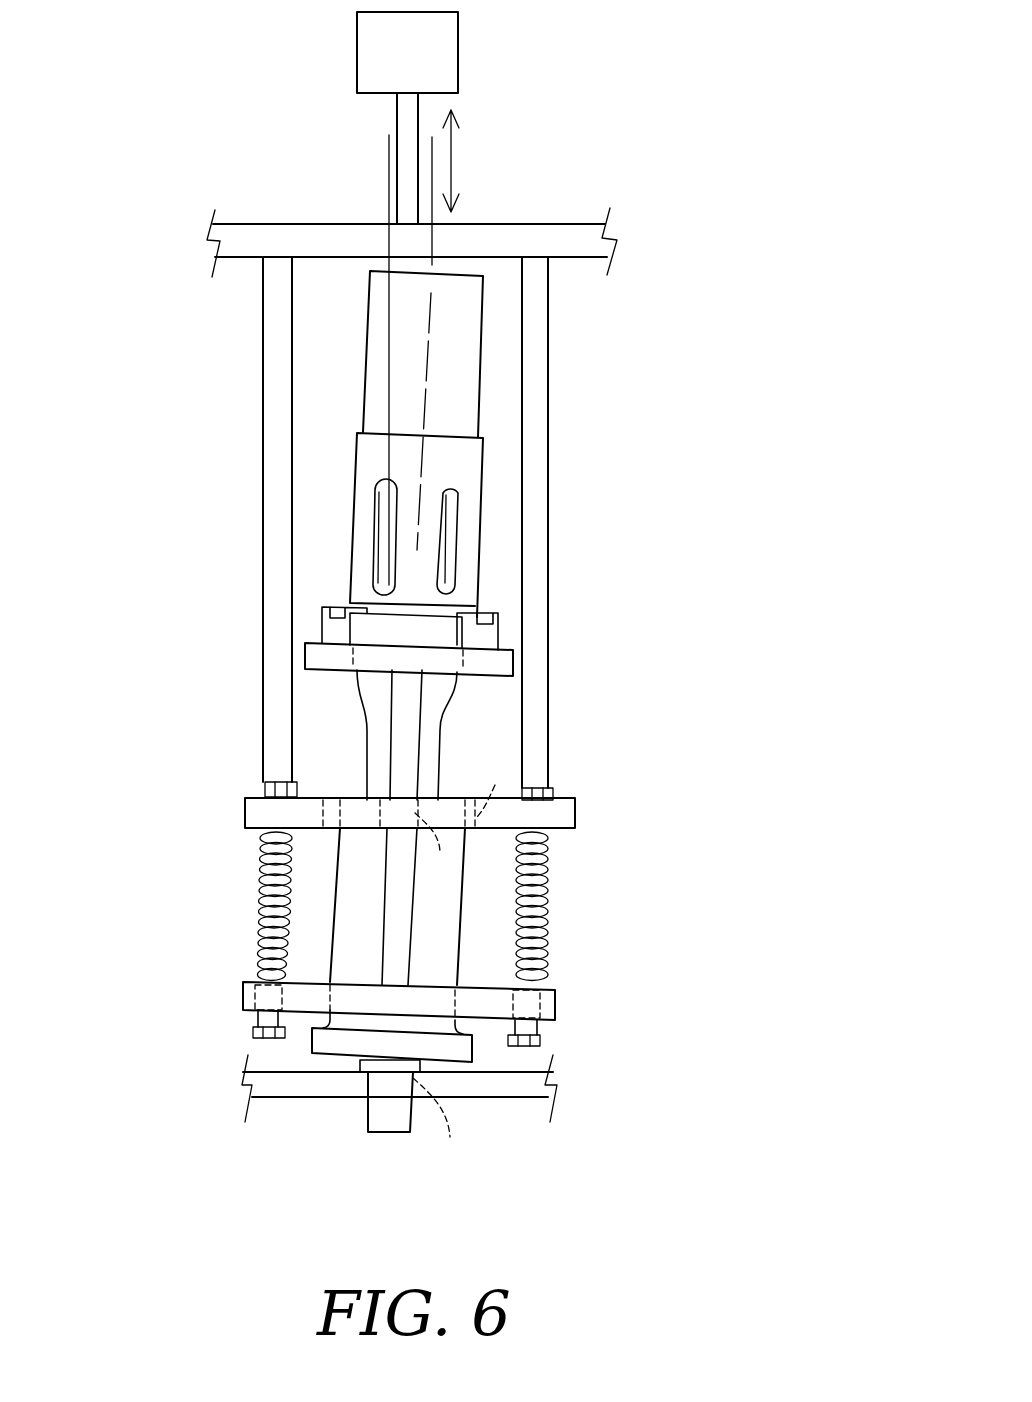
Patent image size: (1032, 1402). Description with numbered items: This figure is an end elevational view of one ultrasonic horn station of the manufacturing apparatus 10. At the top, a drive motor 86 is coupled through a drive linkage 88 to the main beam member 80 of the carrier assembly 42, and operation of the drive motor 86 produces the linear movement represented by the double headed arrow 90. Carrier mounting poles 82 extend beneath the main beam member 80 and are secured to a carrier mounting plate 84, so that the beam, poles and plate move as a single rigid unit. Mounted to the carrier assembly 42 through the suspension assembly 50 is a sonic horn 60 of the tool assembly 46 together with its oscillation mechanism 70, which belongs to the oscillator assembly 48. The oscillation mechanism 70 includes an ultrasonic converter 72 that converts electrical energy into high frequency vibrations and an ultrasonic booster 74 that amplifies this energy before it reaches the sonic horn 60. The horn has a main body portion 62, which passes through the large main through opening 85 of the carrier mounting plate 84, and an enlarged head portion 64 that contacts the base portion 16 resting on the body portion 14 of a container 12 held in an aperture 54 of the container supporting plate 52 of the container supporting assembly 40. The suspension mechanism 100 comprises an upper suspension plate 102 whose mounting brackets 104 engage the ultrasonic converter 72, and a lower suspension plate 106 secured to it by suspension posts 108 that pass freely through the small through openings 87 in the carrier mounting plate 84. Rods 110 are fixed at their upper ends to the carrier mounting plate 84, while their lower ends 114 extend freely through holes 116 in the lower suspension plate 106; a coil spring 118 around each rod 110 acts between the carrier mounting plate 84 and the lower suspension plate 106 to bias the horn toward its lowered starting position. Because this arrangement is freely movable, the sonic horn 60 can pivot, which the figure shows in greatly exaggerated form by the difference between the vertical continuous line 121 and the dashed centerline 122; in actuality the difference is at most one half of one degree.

The manufacturing apparatus 10 is at (732, 388).
The container 12 is at (377, 1168).
The body portion 14 is at (360, 1138).
The base portion 16 is at (345, 1070).
The container supporting assembly 40 is at (478, 55).
The carrier assembly 42 is at (582, 216).
The tool assembly 46 is at (493, 1062).
The oscillator assembly 48 is at (512, 514).
The suspension assembly 50 is at (600, 892).
The container supporting plate 52 is at (273, 1087).
The aperture 54 is at (439, 1126).
The sonic horn 60 is at (476, 976).
The main body portion 62 is at (447, 895).
The enlarged head portion 64 is at (452, 1055).
The oscillation mechanism 70 is at (503, 447).
The ultrasonic converter 72 is at (468, 538).
The ultrasonic booster 74 is at (430, 745).
The main beam member 80 is at (582, 240).
The carrier mounting pole 82 is at (535, 363).
The carrier mounting plate 84 is at (568, 810).
The large main through opening 85 is at (493, 784).
The drive motor 86 is at (357, 52).
The small through opening 87 is at (435, 849).
The drive linkage 88 is at (397, 122).
The double headed arrow 90 is at (452, 162).
The suspension mechanism 100 is at (240, 856).
The upper suspension plate 102 is at (502, 667).
The mounting bracket 104 is at (492, 638).
The lower suspension plate 106 is at (555, 995).
The suspension post 108 is at (405, 710).
The rod 110 is at (260, 892).
The lower end 114 is at (248, 1037).
The hole 116 is at (282, 1000).
The coil spring 118 is at (547, 850).
The vertical continuous line 121 is at (388, 362).
The dashed centerline 122 is at (430, 337).